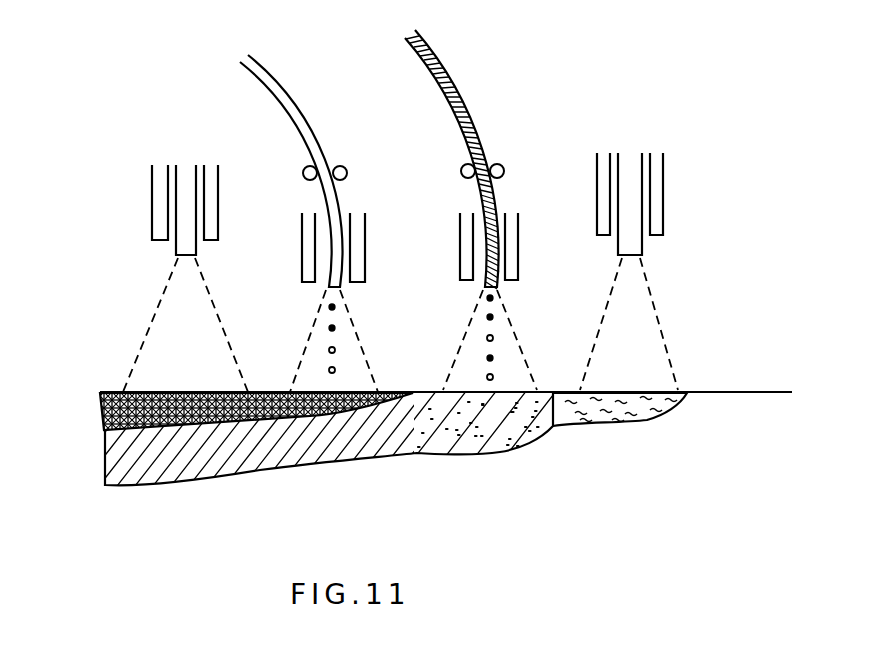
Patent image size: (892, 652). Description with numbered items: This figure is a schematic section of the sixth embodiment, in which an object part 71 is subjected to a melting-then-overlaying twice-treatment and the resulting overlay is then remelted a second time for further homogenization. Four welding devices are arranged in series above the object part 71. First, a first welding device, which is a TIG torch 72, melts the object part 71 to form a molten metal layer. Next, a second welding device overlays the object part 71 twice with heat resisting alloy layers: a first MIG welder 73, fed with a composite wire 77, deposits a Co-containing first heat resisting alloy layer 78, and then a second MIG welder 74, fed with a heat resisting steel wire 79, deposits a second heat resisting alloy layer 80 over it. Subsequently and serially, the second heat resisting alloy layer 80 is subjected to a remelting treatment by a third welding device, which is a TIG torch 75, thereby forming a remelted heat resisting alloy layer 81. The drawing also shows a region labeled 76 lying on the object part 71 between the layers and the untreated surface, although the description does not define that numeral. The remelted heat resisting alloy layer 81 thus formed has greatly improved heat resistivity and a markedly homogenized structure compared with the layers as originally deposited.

The object part 71 is at (712, 362).
The TIG torch 72 is at (667, 205).
The first MIG welder 73 is at (520, 185).
The second MIG welder 74 is at (360, 199).
The TIG torch 75 is at (142, 215).
The first coating layer 76 is at (650, 426).
The composite wire 77 is at (465, 82).
The first heat resisting alloy layer 78 is at (522, 458).
The heat resisting steel wire 79 is at (300, 98).
The second heat resisting alloy layer 80 is at (386, 390).
The remelted heat resisting alloy layer 81 is at (117, 391).